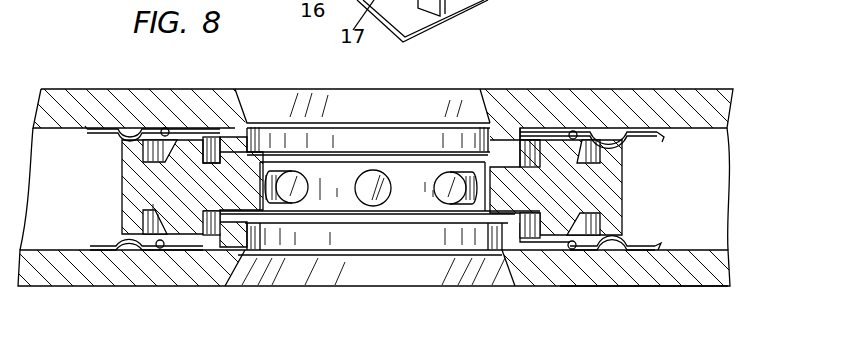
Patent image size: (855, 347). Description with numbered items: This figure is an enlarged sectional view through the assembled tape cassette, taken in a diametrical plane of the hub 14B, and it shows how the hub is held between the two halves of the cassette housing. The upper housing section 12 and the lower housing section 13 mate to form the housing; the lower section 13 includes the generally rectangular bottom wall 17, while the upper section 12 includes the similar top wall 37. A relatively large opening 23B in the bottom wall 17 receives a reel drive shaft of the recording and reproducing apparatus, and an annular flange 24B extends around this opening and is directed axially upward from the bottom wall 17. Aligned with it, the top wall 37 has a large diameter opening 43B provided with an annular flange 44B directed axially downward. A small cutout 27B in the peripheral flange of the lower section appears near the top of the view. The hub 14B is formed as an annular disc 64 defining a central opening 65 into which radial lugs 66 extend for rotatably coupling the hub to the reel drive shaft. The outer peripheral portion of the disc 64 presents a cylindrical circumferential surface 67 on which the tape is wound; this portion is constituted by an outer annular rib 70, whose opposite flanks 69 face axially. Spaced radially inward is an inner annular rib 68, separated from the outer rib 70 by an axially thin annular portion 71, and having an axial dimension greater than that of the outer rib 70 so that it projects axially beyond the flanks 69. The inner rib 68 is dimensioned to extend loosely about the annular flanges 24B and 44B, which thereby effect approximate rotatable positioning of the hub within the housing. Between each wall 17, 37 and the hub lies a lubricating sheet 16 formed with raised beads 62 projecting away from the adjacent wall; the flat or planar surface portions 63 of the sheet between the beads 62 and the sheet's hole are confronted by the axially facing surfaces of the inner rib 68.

The upper housing section 12 is at (688, 71).
The lower housing section 13 is at (651, 294).
The hub 14B is at (634, 200).
The lubricating sheet 16 is at (660, 137).
The bottom wall 17 is at (718, 278).
The opening 23B is at (455, 267).
The annular flange 24B is at (233, 240).
The cutout 27B is at (480, 0).
The top wall 37 is at (717, 97).
The opening 43B is at (400, 140).
The annular flange 44B is at (502, 142).
The raised bead 62 is at (133, 127).
The planar surface portion 63 is at (173, 128).
The annular disc 64 is at (255, 160).
The central opening 65 is at (340, 202).
The radial lug 66 is at (297, 203).
The cylindrical circumferential surface 67 is at (122, 185).
The inner annular rib 68 is at (190, 230).
The flank 69 is at (122, 142).
The outer annular rib 70 is at (124, 220).
The thin annular portion 71 is at (153, 207).